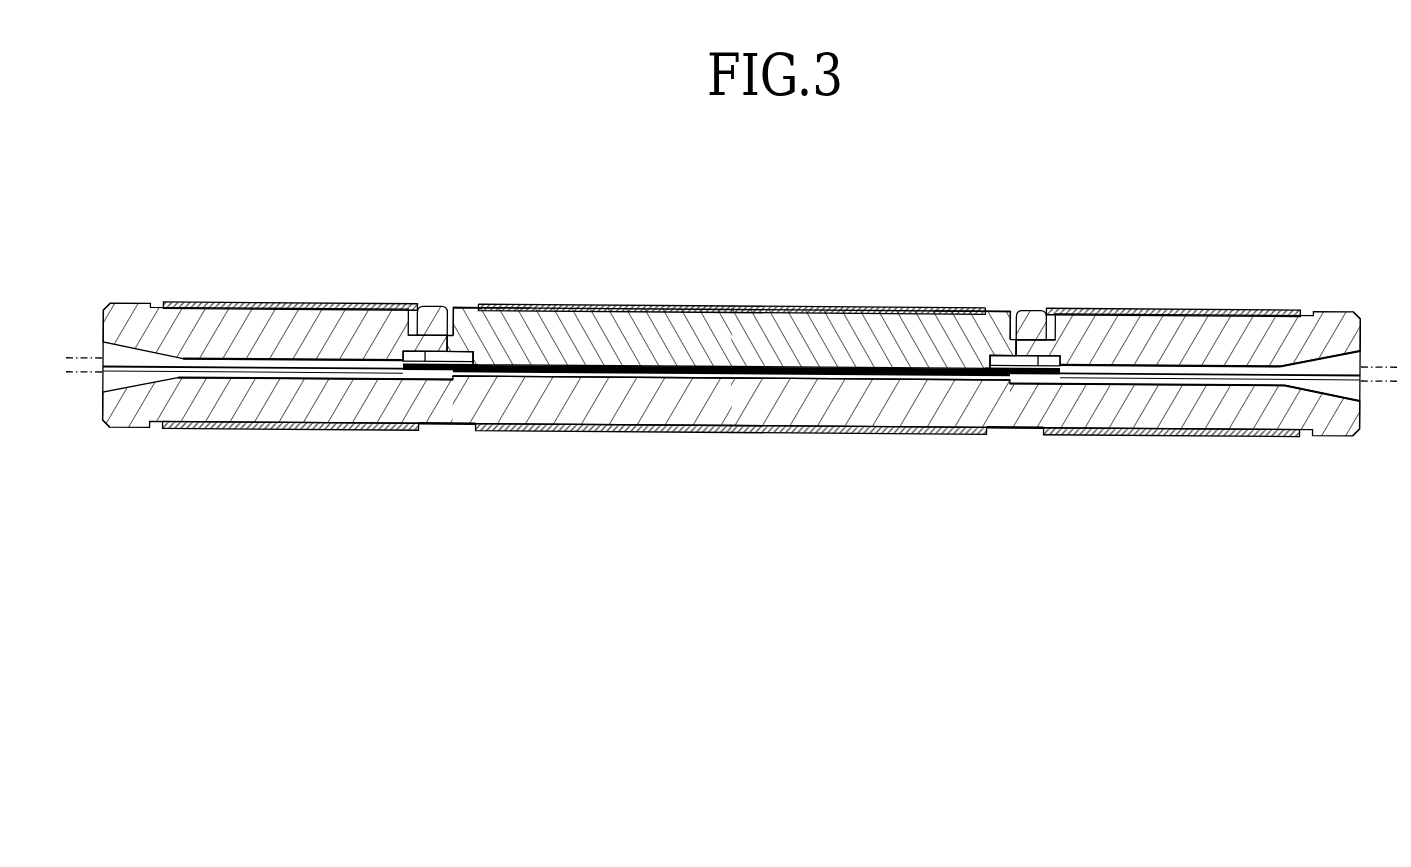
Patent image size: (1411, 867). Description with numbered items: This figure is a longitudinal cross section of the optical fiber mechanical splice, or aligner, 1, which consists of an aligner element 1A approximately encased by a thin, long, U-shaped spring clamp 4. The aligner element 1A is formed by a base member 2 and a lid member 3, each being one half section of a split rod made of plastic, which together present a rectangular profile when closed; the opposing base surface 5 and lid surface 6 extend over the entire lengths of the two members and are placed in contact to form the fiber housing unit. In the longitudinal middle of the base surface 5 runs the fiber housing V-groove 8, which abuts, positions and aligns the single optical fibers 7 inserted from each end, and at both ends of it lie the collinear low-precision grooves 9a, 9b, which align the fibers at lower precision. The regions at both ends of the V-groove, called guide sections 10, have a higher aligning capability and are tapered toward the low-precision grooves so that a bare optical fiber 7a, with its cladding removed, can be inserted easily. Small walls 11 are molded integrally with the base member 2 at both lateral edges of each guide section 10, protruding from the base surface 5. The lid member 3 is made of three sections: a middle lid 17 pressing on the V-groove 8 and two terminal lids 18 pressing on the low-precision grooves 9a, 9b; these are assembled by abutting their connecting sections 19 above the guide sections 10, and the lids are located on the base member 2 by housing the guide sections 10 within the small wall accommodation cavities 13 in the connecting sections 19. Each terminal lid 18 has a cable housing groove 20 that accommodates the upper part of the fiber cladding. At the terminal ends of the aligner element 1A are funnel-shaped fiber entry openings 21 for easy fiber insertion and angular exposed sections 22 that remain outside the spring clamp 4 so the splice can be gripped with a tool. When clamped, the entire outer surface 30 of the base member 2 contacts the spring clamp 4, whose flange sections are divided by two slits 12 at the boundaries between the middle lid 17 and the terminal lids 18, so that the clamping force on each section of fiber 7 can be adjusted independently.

The optical fiber mechanical splice 1 is at (882, 299).
The aligner element 1A is at (1362, 334).
The base member 2 is at (262, 430).
The lid member 3 is at (898, 254).
The spring clamp 4 is at (648, 303).
The base surface 5 is at (770, 350).
The lid surface 6 is at (713, 380).
The optical fiber 7 is at (93, 377).
The bare optical fiber 7a is at (573, 373).
The fiber housing V-groove 8 is at (838, 304).
The low-precision groove 9a is at (293, 370).
The low-precision groove 9b is at (1185, 308).
The guide section 10 is at (443, 375).
The small wall 11 is at (458, 306).
The slit 12 is at (418, 304).
The small wall accommodation cavity 13 is at (505, 303).
The middle lid 17 is at (998, 308).
The terminal lid 18 is at (432, 304).
The connecting section 19 is at (386, 303).
The cable housing groove 20 is at (233, 363).
The fiber entry opening 21 is at (99, 338).
The exposed section 22 is at (126, 300).
The outer surface 30 is at (688, 430).